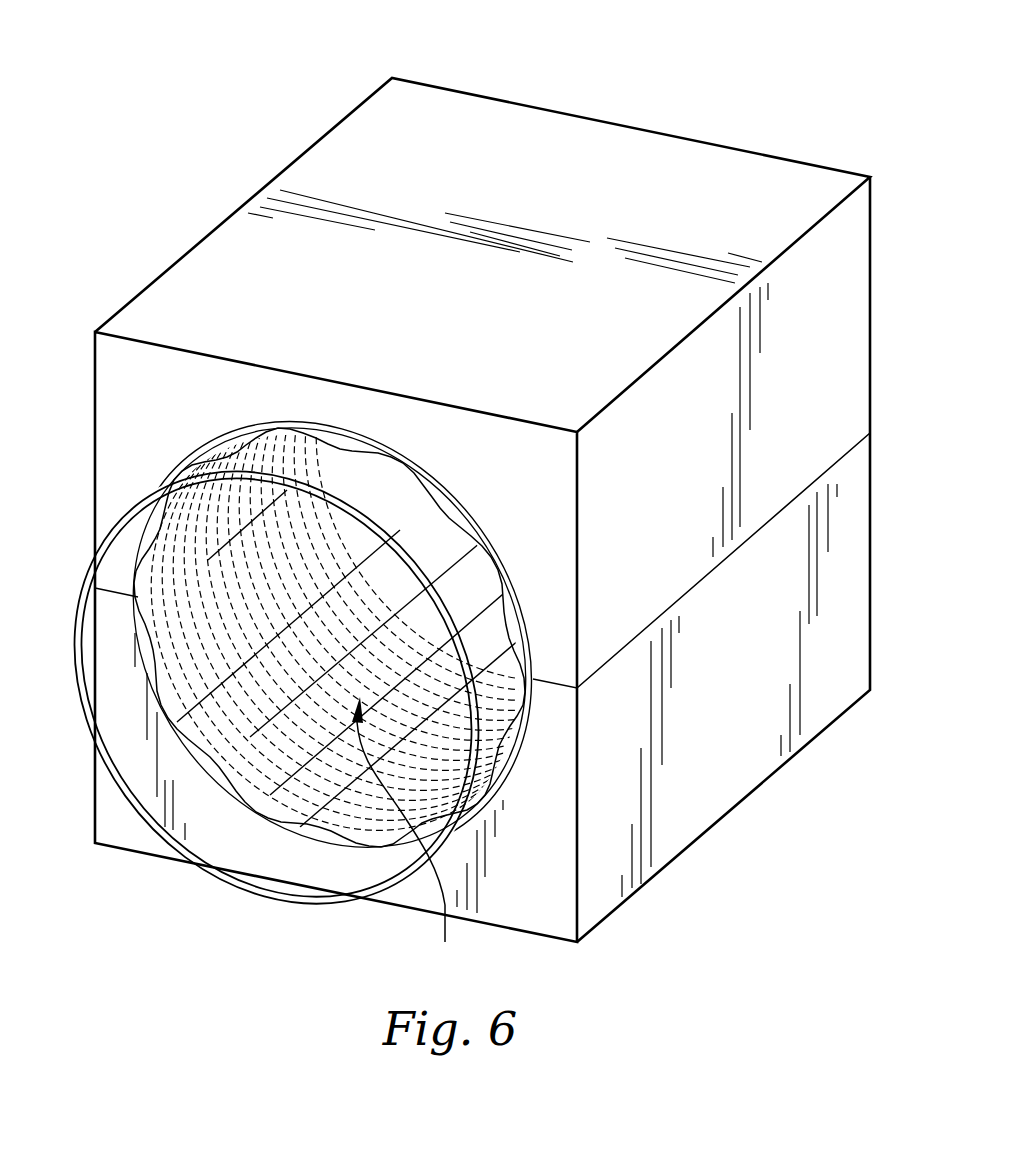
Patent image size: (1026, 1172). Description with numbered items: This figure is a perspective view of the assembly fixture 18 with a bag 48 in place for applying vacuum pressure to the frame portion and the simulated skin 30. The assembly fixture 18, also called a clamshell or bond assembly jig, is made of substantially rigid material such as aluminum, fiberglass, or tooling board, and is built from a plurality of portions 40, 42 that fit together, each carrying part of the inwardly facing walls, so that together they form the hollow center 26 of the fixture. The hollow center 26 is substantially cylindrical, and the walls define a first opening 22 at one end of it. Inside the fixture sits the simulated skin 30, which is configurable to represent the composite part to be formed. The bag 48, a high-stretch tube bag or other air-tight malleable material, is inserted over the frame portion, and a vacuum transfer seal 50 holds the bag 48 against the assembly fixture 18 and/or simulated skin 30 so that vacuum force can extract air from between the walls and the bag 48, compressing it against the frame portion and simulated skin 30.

The assembly fixture 18 is at (758, 176).
The portion 42 is at (853, 280).
The portion 40 is at (857, 572).
The vacuum transfer seal 50 is at (202, 872).
The first opening 22 is at (443, 478).
The simulated skin 30 is at (165, 712).
The bag 48 is at (278, 780).
The hollow center 26 is at (405, 836).